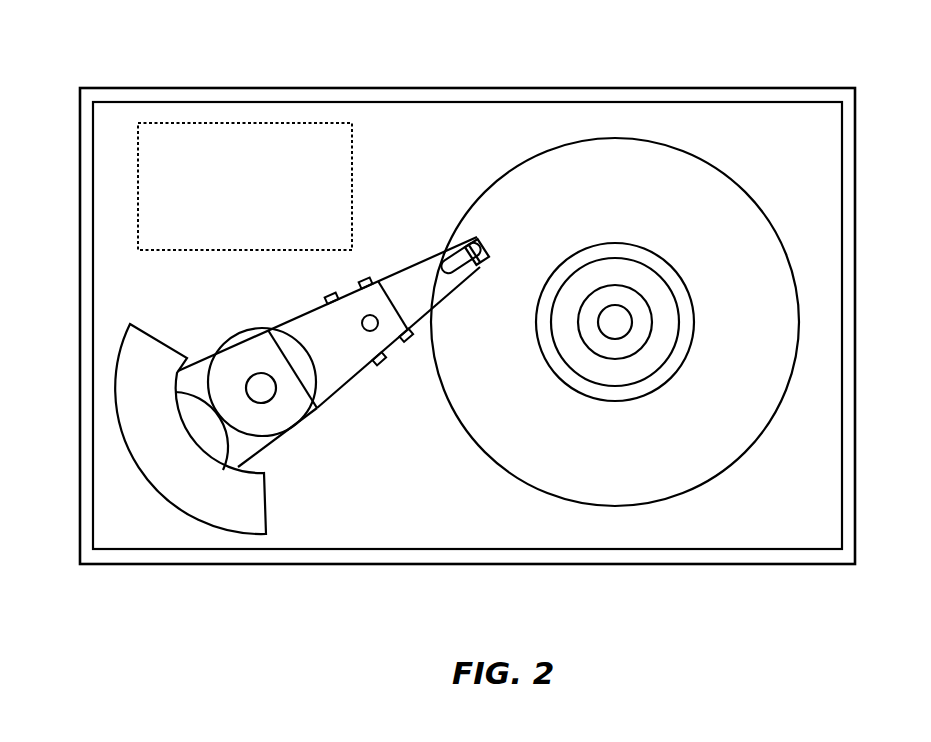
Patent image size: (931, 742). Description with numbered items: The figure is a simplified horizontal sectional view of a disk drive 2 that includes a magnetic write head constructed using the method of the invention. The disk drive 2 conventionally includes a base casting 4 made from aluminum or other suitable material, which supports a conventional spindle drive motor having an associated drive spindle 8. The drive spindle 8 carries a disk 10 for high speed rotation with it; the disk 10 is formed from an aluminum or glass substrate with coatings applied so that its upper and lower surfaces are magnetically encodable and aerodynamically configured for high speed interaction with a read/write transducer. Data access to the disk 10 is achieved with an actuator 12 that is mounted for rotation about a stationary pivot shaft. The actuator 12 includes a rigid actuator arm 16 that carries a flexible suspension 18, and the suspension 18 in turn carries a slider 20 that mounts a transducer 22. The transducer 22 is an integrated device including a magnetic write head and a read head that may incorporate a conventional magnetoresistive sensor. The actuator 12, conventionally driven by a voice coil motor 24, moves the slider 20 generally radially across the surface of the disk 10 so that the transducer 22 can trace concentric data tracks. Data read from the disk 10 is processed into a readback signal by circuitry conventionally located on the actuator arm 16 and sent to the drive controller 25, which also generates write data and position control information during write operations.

The disk drive 2 is at (114, 47).
The base casting 4 is at (440, 88).
The drive spindle 8 is at (615, 339).
The disk 10 is at (761, 285).
The actuator 12 is at (285, 417).
The actuator arm 16 is at (352, 375).
The suspension 18 is at (384, 281).
The slider 20 is at (472, 265).
The transducer 22 is at (483, 240).
The voice coil motor 24 is at (157, 492).
The drive controller 25 is at (352, 181).